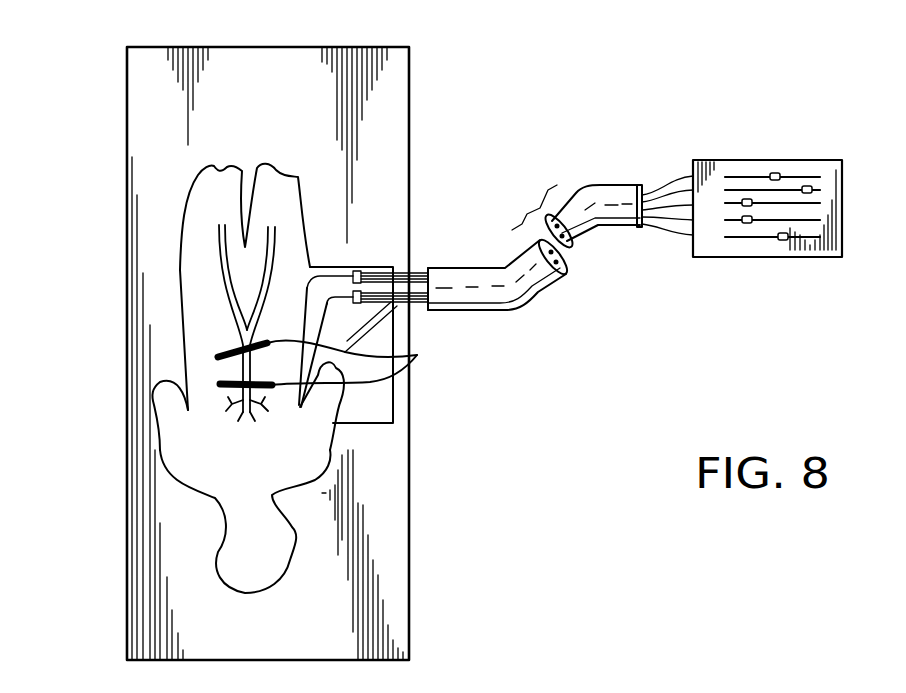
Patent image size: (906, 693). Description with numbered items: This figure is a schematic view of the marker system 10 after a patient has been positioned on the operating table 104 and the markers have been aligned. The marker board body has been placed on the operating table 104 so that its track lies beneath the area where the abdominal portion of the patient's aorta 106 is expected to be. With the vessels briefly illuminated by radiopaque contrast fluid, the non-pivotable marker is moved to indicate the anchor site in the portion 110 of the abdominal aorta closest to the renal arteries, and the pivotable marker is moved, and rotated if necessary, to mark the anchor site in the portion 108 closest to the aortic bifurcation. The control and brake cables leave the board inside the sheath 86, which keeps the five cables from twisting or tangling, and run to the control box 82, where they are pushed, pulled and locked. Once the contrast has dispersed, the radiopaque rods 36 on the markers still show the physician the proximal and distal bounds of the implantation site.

The marker system 10 is at (455, 463).
The operating table 104 is at (412, 130).
The sheath 86 is at (447, 268).
The control box 82 is at (774, 160).
The radiopaque strip or rod 36 is at (417, 355).
The portion of the abdominal aorta closest to the aortic bifurcation 108 is at (240, 345).
The abdominal portion of the patient's aorta 106 is at (222, 382).
The portion of the abdominal aorta closest to the renal arteries 110 is at (242, 393).